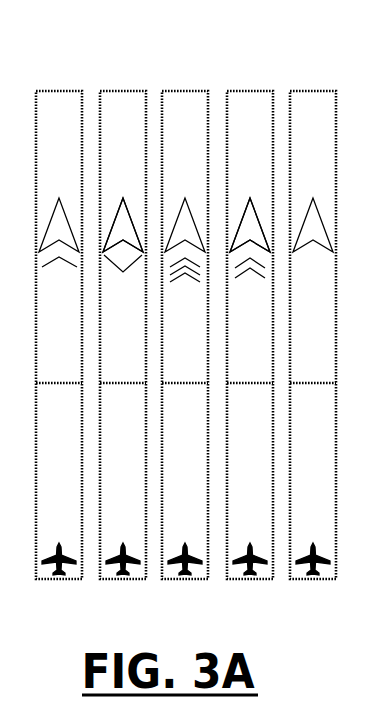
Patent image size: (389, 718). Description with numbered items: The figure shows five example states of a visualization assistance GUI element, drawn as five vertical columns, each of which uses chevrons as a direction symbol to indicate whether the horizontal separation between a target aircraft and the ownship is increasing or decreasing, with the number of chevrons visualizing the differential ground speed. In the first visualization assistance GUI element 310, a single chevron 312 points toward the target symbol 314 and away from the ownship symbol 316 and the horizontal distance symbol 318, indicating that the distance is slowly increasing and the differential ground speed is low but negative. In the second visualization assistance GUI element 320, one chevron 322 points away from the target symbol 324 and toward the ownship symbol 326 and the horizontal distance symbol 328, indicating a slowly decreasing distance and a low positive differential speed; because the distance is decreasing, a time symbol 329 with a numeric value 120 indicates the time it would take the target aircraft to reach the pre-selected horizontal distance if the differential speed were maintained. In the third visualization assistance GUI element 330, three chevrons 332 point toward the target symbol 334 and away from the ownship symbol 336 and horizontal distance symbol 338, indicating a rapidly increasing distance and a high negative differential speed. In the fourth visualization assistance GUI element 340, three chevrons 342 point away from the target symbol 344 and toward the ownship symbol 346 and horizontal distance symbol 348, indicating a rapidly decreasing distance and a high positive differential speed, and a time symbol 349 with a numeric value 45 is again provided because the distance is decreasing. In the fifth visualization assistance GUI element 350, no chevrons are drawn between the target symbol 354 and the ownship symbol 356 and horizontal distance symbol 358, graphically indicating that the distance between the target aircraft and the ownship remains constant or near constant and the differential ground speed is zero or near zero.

The visualization assistance GUI element 310 is at (60, 91).
The visualization assistance GUI element 320 is at (126, 91).
The visualization assistance GUI element 330 is at (185, 91).
The visualization assistance GUI element 340 is at (254, 91).
The visualization assistance GUI element 350 is at (316, 91).
The target symbol 314 is at (59, 196).
The target symbol 324 is at (128, 188).
The time symbol 329 is at (122, 168).
The speed value 120 is at (123, 198).
The target symbol 334 is at (185, 196).
The target symbol 344 is at (253, 193).
The time symbol 349 is at (247, 168).
The speed value 45 is at (250, 198).
The speed arrow indicator 354 is at (313, 196).
The chevron 312 is at (47, 270).
The chevron 322 is at (112, 258).
The chevrons 332 is at (177, 284).
The chevrons 342 is at (240, 280).
The horizontal distance symbol 318 is at (57, 386).
The horizontal distance symbol 328 is at (120, 386).
The horizontal distance symbol 338 is at (182, 386).
The horizontal distance symbol 348 is at (247, 386).
The divider line 358 is at (310, 386).
The ownship symbol 316 is at (57, 545).
The ownship symbol 326 is at (121, 545).
The ownship symbol 336 is at (183, 545).
The ownship symbol 346 is at (248, 545).
The aircraft symbol 356 is at (311, 545).